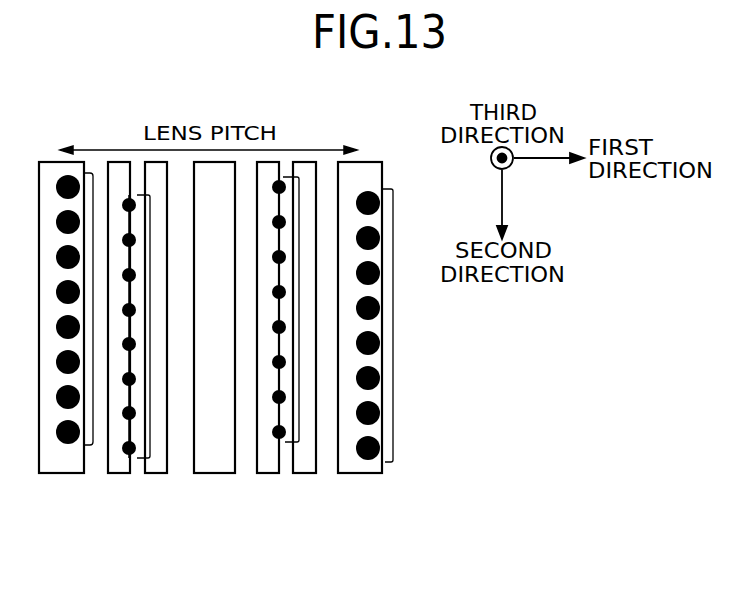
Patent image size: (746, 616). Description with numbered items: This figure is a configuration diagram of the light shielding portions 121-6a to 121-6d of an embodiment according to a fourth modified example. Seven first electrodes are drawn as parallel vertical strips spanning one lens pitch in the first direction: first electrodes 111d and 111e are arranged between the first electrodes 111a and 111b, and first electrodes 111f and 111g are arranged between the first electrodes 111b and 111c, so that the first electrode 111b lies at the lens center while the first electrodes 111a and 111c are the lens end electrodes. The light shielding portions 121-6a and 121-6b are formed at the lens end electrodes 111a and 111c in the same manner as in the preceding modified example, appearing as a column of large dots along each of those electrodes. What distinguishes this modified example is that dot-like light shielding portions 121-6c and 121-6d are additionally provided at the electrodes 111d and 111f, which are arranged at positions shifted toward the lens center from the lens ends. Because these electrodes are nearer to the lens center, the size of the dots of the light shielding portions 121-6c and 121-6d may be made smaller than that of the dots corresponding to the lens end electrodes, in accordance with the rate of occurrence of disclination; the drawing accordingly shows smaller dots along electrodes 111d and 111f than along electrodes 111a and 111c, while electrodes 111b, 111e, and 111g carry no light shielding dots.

The first electrode 111a is at (55, 473).
The first electrode 111b is at (215, 473).
The first electrode 111c is at (367, 473).
The first electrode 111d is at (117, 473).
The first electrode 111e is at (163, 473).
The first electrode 111f is at (270, 473).
The first electrode 111g is at (308, 473).
The light shielding portion 121-6a is at (93, 398).
The light shielding portion 121-6b is at (393, 325).
The light shielding portion 121-6c is at (150, 413).
The light shielding portion 121-6d is at (299, 398).